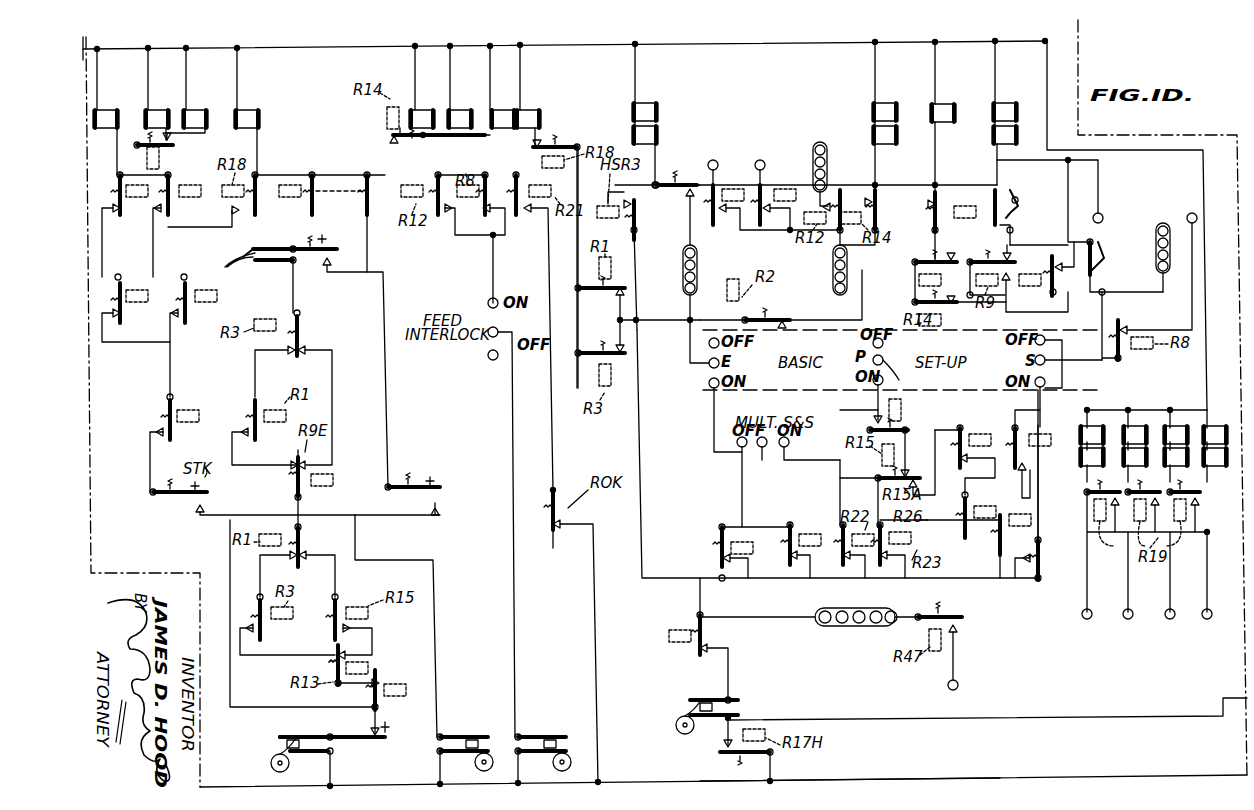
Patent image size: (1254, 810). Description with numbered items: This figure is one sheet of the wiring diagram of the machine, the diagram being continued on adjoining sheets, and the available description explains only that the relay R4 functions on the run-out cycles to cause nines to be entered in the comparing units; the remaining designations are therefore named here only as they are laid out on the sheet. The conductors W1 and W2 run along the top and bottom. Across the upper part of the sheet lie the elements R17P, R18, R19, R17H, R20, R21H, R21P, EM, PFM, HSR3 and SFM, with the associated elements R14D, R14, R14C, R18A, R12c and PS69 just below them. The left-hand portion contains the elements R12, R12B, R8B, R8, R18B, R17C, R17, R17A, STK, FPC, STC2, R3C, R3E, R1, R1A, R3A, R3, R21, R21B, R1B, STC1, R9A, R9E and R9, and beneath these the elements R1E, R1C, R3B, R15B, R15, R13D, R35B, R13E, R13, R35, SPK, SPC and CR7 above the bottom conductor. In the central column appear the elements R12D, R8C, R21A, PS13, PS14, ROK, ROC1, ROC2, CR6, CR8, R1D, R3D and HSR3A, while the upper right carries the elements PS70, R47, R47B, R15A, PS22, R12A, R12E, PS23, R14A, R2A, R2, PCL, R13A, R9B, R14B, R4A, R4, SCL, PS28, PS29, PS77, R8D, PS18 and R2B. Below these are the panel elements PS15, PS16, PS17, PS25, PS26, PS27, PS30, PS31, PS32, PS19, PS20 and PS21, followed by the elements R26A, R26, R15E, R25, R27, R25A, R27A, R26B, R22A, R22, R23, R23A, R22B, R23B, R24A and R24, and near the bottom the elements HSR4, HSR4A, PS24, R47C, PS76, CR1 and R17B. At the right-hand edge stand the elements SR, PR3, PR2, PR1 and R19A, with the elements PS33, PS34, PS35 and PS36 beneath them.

The supply line W1 is at (736, 49).
The return line W2 is at (1028, 770).
The relay coil R17P is at (109, 108).
The relay coil R18 is at (159, 108).
The relay coil R19 is at (197, 108).
The relay coil R17H is at (251, 108).
The relay contact R14D is at (176, 139).
The relay coil R14 is at (162, 156).
The relay coil R12 is at (143, 200).
The relay contact R12B is at (117, 217).
The relay contact R8B is at (161, 214).
The relay coil R8 is at (194, 185).
The relay contact R18B is at (248, 225).
The relay contact R17C is at (292, 185).
The relay coil R17 is at (309, 173).
The relay contact R17A is at (367, 226).
The start key STK is at (322, 227).
The feed pawl contact FPC is at (266, 260).
The start contact STC2 is at (321, 266).
The relay contact R3C is at (306, 326).
The relay contact R3E is at (288, 350).
The relay coil R1 is at (145, 303).
The relay contact R1A is at (114, 328).
The relay contact R3A is at (183, 331).
The relay coil R3 is at (218, 296).
The relay coil R21 is at (198, 404).
The relay contact R21B is at (161, 431).
The relay contact R1B is at (245, 430).
The start contact STC1 is at (206, 493).
The relay contact R9A is at (291, 460).
The relay contact R9E is at (996, 255).
The relay coil R9 is at (326, 486).
The relay contact R1E is at (302, 558).
The relay contact R1C is at (283, 556).
The relay contact R3B is at (260, 630).
The relay contact R15B is at (340, 602).
The relay coil R15 is at (784, 188).
The relay contact R13D is at (352, 654).
The relay contact R35B is at (368, 663).
The relay contact R13E is at (330, 662).
The relay coil R13 is at (933, 256).
The relay coil R35 is at (393, 685).
The space key SPK is at (380, 722).
The space contact SPC is at (366, 740).
The clutch magnet CR7 is at (270, 744).
The relay coil R20 is at (414, 110).
The relay coil R21H is at (478, 108).
The relay coil R21P is at (525, 108).
The relay contact R14C is at (395, 147).
The relay contact R18A is at (550, 138).
The relay contact R12D is at (450, 222).
The relay contact R8C is at (487, 208).
The relay contact R21A is at (528, 224).
The feed interlock switch PS13 is at (488, 337).
The feed interlock switch PS14 is at (493, 360).
The read-out key ROK is at (440, 462).
The read-out contact ROC1 is at (439, 494).
The read-out contact ROC2 is at (556, 545).
The clutch magnet CR6 is at (488, 742).
The clutch magnet CR8 is at (581, 742).
The eject magnet EM is at (654, 106).
The high speed relay HSR3 is at (933, 108).
The relay contact HSR3A is at (630, 218).
The relay contact R12c is at (682, 180).
The program switch PS69 is at (708, 160).
The relay contact R1D is at (600, 267).
The relay contact R3D is at (634, 352).
The program switch PS70 is at (758, 164).
The relay coil R47 is at (748, 188).
The relay contact R47B is at (723, 218).
The relay contact R15A is at (771, 218).
The program switch PS22 is at (817, 146).
The relay contact R12A is at (842, 186).
The relay contact R12E is at (849, 192).
The program switch PS23 is at (834, 270).
The relay contact R14A is at (875, 200).
The paper feed magnet PFM is at (874, 124).
The space feed magnet SFM is at (995, 106).
The relay contact R2A is at (939, 188).
The relay coil R2 is at (967, 203).
The paper contact PCL is at (1005, 202).
The relay contact R13A is at (949, 250).
The relay contact R9B is at (1010, 312).
The relay contact R14B is at (958, 311).
The relay contact R4A is at (1060, 253).
The relay R4 is at (1039, 274).
The switch contact SCL is at (1092, 249).
The program switch PS28 is at (1101, 213).
The program switch PS29 is at (1150, 224).
The program switch PS77 is at (1192, 214).
The relay contact R8D is at (1128, 325).
The program switch PS18 is at (698, 283).
The relay contact R2B is at (793, 320).
The selector switch PS15 is at (711, 342).
The selector switch PS16 is at (707, 363).
The selector switch PS17 is at (705, 380).
The selector switch PS25 is at (878, 336).
The selector switch PS26 is at (898, 390).
The selector switch PS27 is at (856, 394).
The selector switch PS30 is at (1045, 340).
The selector switch PS31 is at (1045, 360).
The selector switch PS32 is at (1045, 382).
The switch PS19 is at (712, 445).
The switch PS20 is at (760, 458).
The switch PS21 is at (785, 452).
The relay contact R26A is at (876, 420).
The relay coil R26 is at (905, 420).
The relay contact R15E is at (880, 478).
The relay coil R25 is at (986, 432).
The relay coil R27 is at (1028, 437).
The relay contact R25A is at (968, 478).
The relay contact R27A is at (1022, 470).
The relay contact R26B is at (978, 512).
The relay contact R22A is at (715, 558).
The relay coil R22 is at (746, 554).
The relay coil R23 is at (810, 534).
The relay contact R23A is at (791, 569).
The relay contact R22B is at (853, 569).
The relay contact R23B is at (893, 574).
The relay contact R24A is at (1000, 552).
The relay coil R24 is at (1038, 556).
The high speed relay HSR4 is at (670, 640).
The relay contact HSR4A is at (703, 660).
The program switch PS24 is at (854, 624).
The relay contact R47C is at (953, 629).
The program switch PS76 is at (958, 682).
The clutch magnet CR1 is at (690, 713).
The relay contact R17B is at (718, 753).
The relay SR is at (1093, 431).
The relay PR3 is at (1134, 431).
The relay PR2 is at (1176, 431).
The relay PR1 is at (1217, 431).
The relay contact R19A is at (1108, 488).
The program switch PS33 is at (1088, 621).
The program switch PS34 is at (1128, 621).
The program switch PS35 is at (1168, 621).
The program switch PS36 is at (1212, 620).